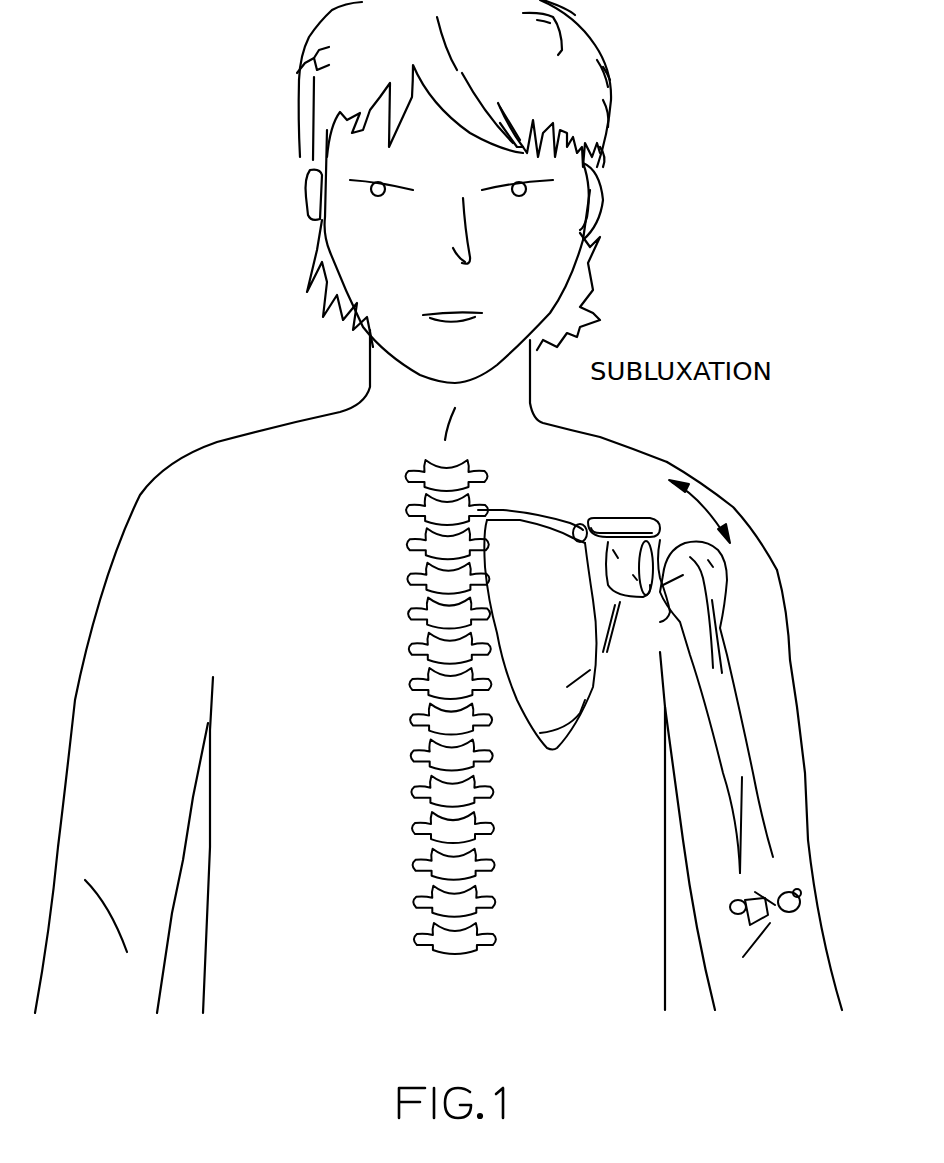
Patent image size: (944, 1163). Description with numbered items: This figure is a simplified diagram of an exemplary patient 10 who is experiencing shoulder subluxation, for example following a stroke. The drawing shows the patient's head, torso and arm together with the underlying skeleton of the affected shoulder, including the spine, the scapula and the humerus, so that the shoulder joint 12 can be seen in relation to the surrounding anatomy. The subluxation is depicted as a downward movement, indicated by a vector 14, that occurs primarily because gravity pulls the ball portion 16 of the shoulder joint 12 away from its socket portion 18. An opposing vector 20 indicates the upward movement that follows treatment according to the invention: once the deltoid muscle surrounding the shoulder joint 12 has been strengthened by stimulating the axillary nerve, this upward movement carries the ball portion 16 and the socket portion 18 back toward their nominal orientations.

The patient 10 is at (733, 312).
The shoulder joint 12 is at (673, 532).
The vector 14 is at (665, 497).
The ball portion 16 is at (727, 553).
The socket portion 18 is at (660, 622).
The vector 20 is at (720, 493).